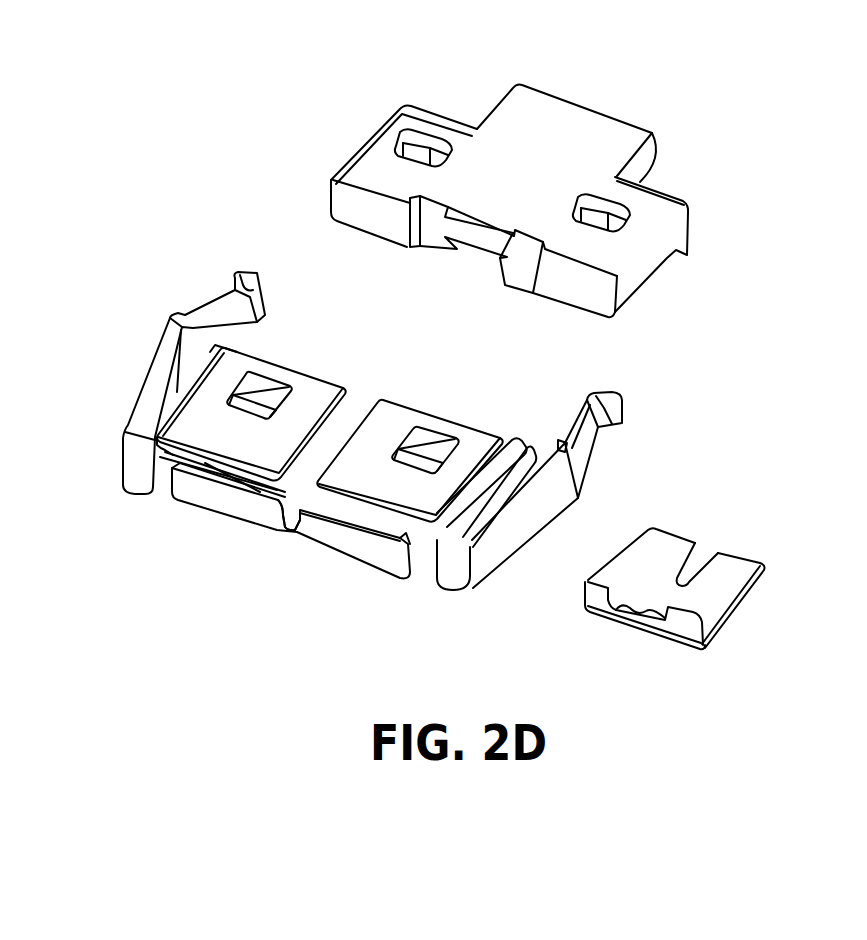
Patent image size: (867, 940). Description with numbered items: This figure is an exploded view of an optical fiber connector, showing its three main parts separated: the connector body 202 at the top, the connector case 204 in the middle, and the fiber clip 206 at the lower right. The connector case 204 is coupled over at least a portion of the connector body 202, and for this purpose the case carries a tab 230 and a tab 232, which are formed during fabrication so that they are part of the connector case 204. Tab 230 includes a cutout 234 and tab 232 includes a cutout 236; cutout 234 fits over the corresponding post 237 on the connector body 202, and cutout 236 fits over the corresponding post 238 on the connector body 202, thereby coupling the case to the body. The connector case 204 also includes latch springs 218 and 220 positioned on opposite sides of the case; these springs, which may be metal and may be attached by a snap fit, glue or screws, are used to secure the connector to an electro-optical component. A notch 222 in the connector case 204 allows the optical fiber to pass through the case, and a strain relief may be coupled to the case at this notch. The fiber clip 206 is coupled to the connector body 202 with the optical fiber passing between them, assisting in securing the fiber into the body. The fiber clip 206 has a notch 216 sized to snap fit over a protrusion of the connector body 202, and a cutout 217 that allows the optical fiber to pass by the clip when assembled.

The connector body 202 is at (526, 171).
The connector case 204 is at (346, 472).
The fiber clip 206 is at (680, 584).
The notch 216 is at (612, 649).
The cutout 217 is at (716, 530).
The latch spring 218 is at (550, 490).
The latch spring 220 is at (162, 383).
The notch 222 is at (303, 567).
The tab 230 is at (268, 395).
The tab 232 is at (409, 426).
The cutout 234 is at (271, 364).
The cutout 236 is at (437, 420).
The post 237 is at (424, 95).
The post 238 is at (637, 191).